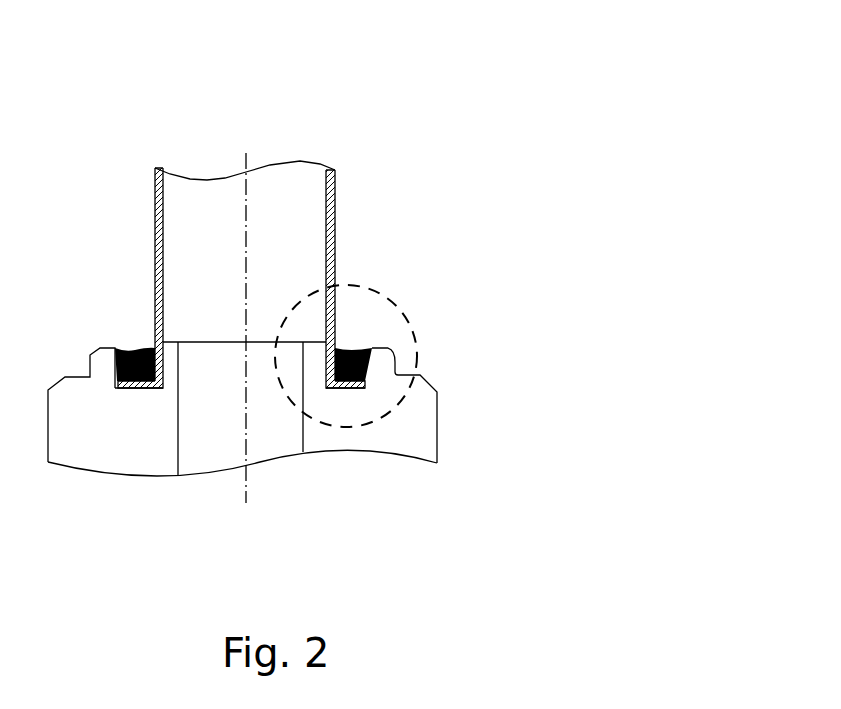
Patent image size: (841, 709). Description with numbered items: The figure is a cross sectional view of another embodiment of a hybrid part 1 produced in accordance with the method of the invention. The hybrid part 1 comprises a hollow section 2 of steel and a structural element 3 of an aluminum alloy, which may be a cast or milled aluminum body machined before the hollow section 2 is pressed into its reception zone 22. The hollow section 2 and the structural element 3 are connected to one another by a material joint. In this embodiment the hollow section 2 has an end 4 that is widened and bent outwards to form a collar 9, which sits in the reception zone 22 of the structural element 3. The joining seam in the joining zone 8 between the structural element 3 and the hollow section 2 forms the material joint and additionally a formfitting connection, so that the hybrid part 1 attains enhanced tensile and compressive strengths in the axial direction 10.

The hybrid part 1 is at (542, 153).
The hollow section 2 is at (335, 208).
The structural element 3 is at (425, 420).
The end 4 is at (162, 368).
The joining zone 8 is at (403, 312).
The collar 9 is at (131, 390).
The axial direction 10 is at (278, 145).
The reception zone 22 is at (357, 338).